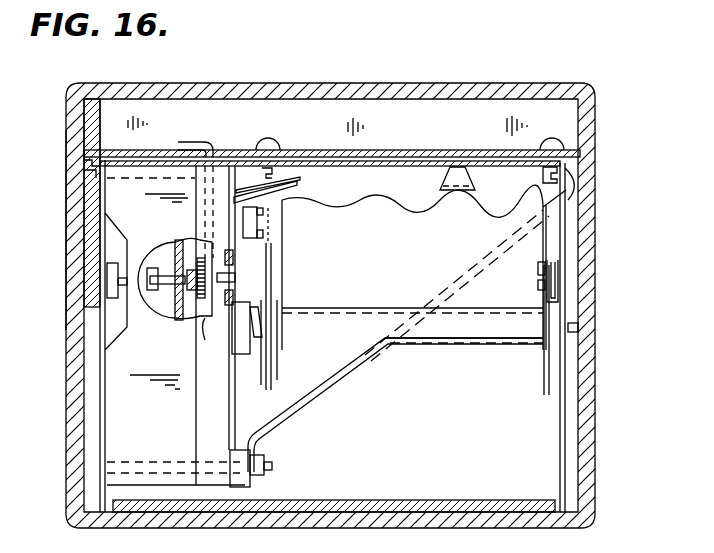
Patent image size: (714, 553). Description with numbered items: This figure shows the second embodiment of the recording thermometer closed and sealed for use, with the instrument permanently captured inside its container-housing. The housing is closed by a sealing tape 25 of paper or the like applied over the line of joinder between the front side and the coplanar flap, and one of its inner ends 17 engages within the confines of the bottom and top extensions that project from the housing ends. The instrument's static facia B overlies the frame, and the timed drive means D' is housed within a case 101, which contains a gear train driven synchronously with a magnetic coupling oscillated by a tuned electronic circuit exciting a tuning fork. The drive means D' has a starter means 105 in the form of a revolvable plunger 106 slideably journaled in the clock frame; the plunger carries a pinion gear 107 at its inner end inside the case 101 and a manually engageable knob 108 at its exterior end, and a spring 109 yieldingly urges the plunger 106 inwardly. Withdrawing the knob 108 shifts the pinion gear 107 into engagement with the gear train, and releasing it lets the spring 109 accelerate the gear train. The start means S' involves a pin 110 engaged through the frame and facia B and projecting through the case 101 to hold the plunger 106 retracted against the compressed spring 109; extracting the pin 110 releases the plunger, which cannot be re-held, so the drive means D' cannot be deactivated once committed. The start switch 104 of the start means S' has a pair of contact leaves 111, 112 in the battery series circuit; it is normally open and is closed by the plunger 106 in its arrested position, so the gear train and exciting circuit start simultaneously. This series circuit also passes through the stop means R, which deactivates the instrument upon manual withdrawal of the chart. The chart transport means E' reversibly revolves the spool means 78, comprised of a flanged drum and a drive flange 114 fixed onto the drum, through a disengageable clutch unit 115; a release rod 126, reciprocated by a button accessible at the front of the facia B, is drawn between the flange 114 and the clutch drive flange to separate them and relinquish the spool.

The sealing tape 25 is at (64, 202).
The pin 110 is at (196, 143).
The start means S' is at (241, 121).
The inner end 17 is at (333, 126).
The facia B is at (520, 151).
The revolvable plunger 106 is at (172, 247).
The starter means 105 is at (152, 305).
The spring 109 is at (188, 318).
The pinion gear 107 is at (209, 318).
The start switch 104 is at (258, 225).
The contact leaf 111 is at (235, 253).
The release rod 126 is at (273, 252).
The contact leaf 112 is at (243, 282).
The drive flange 114 is at (283, 365).
The disengageable clutch unit 115 is at (252, 368).
The knob 108 is at (108, 312).
The timed drive means D' is at (68, 412).
The case 101 is at (176, 451).
The stop means R is at (556, 258).
The chart transport means E' is at (468, 403).
The spool means 78 is at (545, 397).